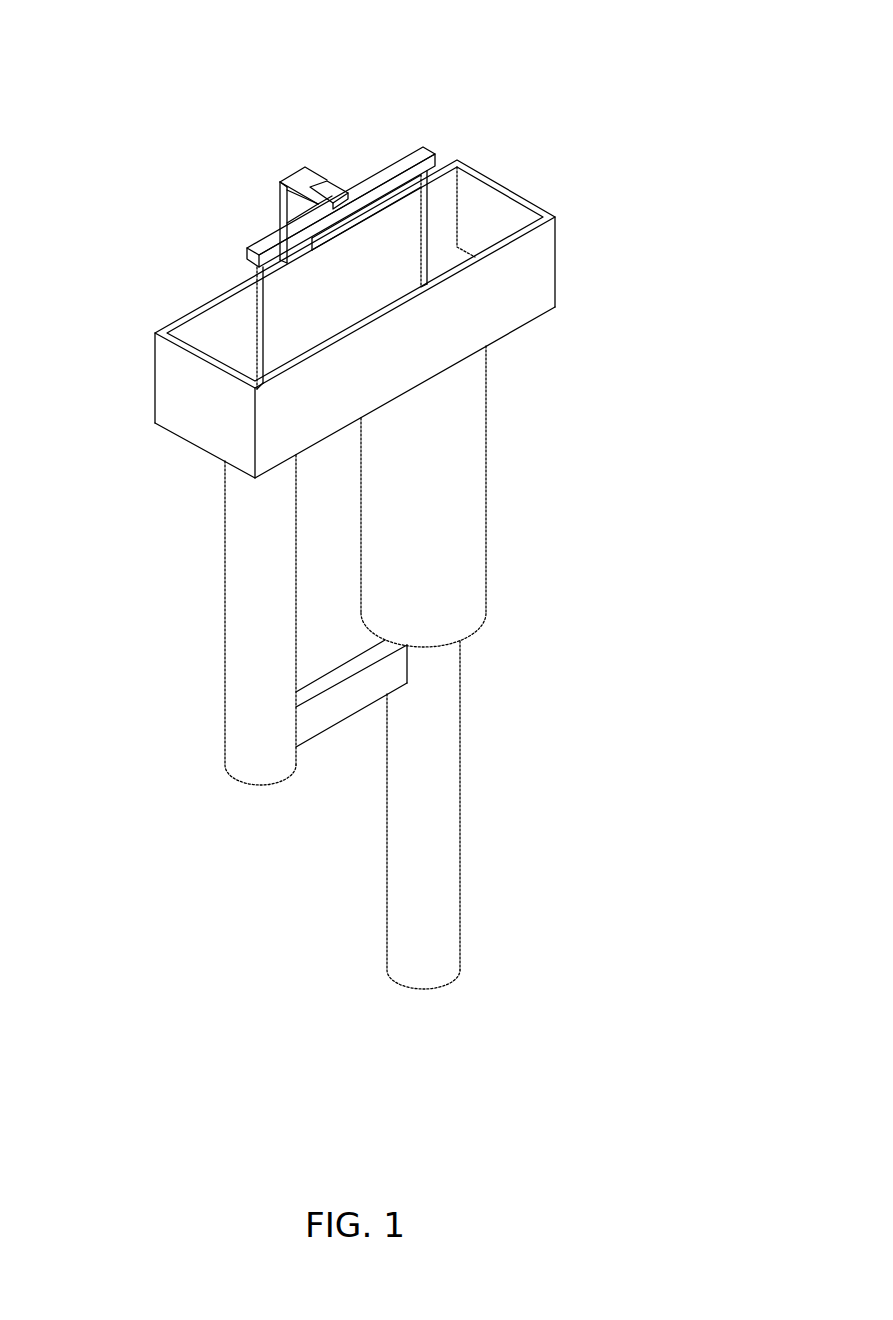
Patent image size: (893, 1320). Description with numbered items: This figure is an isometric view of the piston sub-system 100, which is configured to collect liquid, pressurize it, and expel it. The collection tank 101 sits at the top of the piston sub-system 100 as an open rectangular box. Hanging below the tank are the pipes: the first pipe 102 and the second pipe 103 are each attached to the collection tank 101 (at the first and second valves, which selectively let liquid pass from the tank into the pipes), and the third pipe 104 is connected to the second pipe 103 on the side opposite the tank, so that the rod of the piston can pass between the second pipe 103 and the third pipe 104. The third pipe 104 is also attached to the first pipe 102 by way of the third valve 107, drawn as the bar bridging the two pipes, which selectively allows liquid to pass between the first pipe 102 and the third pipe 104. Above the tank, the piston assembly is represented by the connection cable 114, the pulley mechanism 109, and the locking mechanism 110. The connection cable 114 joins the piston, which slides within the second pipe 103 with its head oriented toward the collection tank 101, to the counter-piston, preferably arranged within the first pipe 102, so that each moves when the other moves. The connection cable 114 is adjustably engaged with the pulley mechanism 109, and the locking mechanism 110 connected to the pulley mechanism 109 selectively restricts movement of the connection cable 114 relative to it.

The piston sub-system 100 is at (511, 90).
The collection tank 101 is at (550, 267).
The first pipe 102 is at (233, 622).
The second pipe 103 is at (472, 503).
The third pipe 104 is at (448, 850).
The third valve 107 is at (365, 695).
The pulley mechanism 109 is at (290, 182).
The locking mechanism 110 is at (330, 188).
The connection cable 114 is at (260, 302).